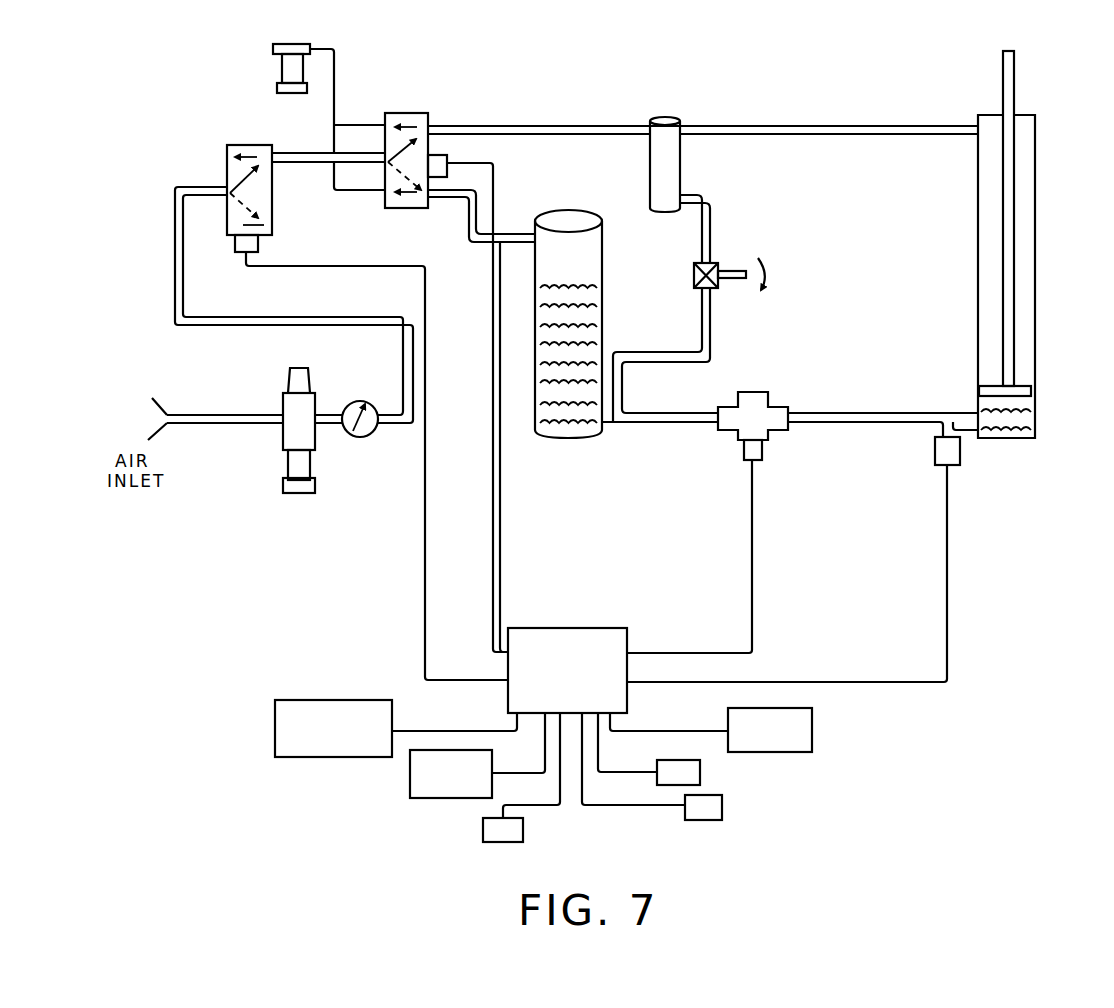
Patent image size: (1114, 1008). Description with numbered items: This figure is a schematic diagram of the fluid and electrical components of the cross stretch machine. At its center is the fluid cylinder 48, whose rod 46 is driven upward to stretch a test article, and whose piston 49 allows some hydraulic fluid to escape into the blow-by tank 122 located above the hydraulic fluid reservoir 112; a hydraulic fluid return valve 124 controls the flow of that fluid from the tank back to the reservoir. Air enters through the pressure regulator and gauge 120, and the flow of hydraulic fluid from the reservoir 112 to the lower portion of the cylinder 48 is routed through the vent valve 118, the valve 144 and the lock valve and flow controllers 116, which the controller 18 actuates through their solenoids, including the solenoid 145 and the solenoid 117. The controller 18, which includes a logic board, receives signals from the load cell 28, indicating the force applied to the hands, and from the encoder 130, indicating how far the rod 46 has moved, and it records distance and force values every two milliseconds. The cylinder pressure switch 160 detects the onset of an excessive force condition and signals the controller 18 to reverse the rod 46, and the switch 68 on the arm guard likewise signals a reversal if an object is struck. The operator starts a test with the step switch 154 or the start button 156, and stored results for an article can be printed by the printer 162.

The controller 18 is at (576, 689).
The load cell 28 is at (812, 730).
The rod 46 is at (1014, 70).
The fluid cylinder 48 is at (1037, 270).
The piston 49 is at (1022, 383).
The switch 68 is at (700, 772).
The hydraulic fluid reservoir 112 is at (595, 252).
The lock valve and flow controllers 116 is at (753, 400).
The solenoid 117 is at (762, 450).
The vent valve 118 is at (237, 173).
The pressure regulator and gauge 120 is at (331, 408).
The blow-by tank 122 is at (675, 162).
The hydraulic fluid return valve 124 is at (714, 263).
The encoder 130 is at (287, 730).
The valve 144 is at (409, 118).
The solenoid 145 is at (439, 162).
The step switch 154 is at (487, 830).
The start button 156 is at (722, 807).
The cylinder pressure switch 160 is at (935, 453).
The printer 162 is at (420, 784).